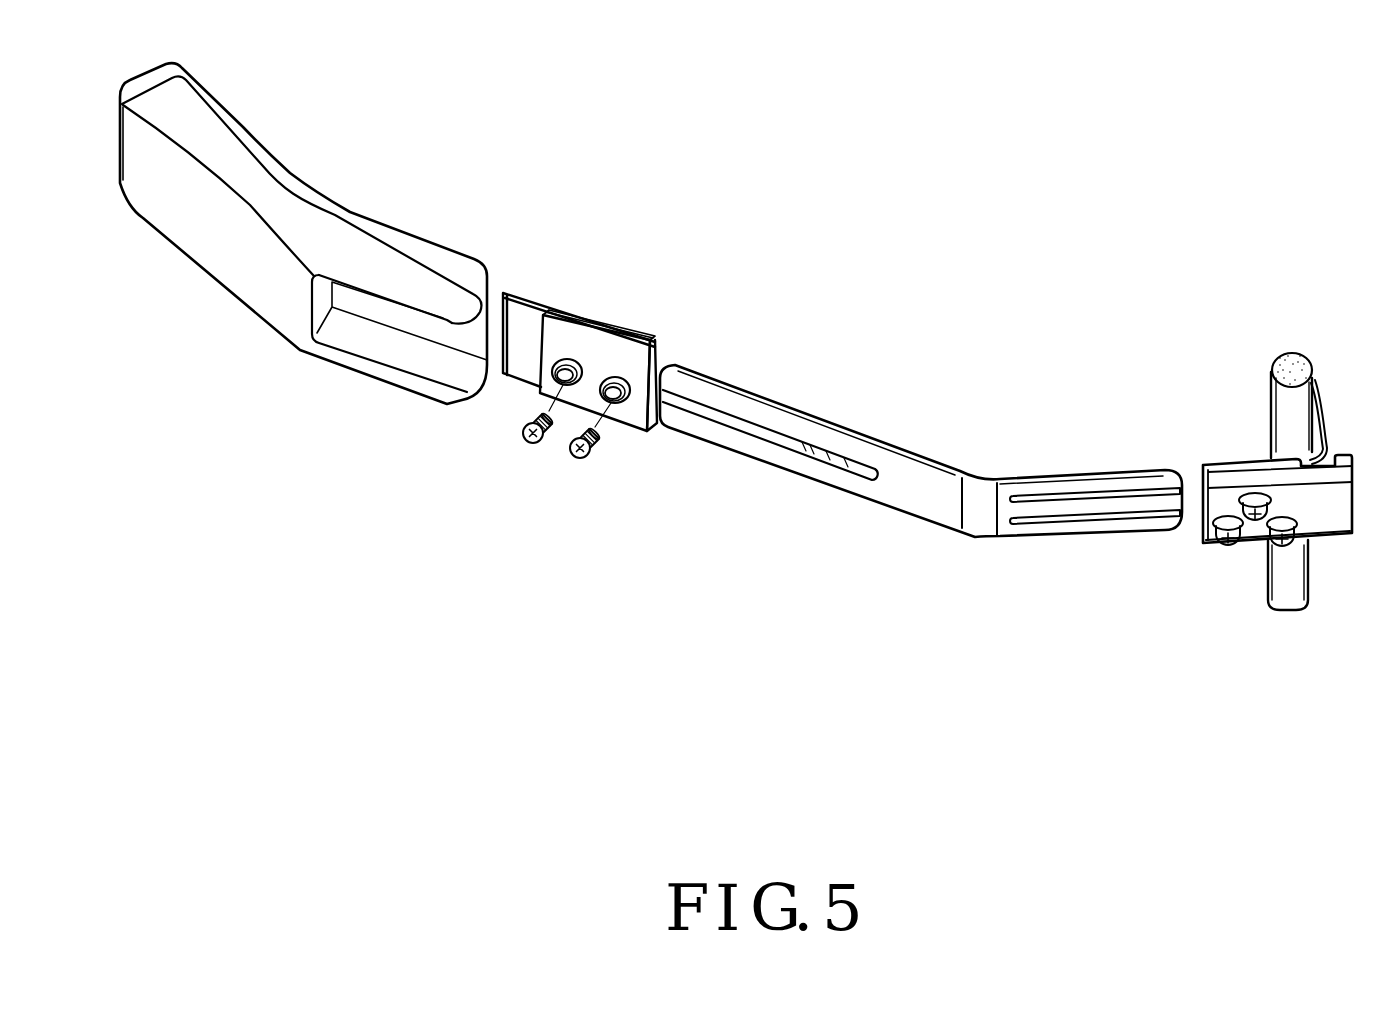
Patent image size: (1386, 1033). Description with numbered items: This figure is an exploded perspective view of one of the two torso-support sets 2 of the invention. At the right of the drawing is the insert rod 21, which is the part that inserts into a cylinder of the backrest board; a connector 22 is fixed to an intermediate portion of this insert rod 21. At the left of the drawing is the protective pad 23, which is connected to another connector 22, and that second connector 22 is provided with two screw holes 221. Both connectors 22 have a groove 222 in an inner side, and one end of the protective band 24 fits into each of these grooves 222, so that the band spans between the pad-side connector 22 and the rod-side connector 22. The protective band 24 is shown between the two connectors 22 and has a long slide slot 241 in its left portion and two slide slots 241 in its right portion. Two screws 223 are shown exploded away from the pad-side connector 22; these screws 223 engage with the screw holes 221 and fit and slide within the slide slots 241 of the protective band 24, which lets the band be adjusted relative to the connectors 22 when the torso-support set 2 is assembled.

The torso-support set 2 is at (523, 575).
The insert rod 21 is at (1287, 590).
The connector 22 is at (927, 419).
The screw hole 221 is at (612, 405).
The groove 222 is at (661, 378).
The screw 223 is at (573, 457).
The protective pad 23 is at (303, 217).
The protective band 24 is at (921, 487).
The slide slot 241 is at (827, 453).